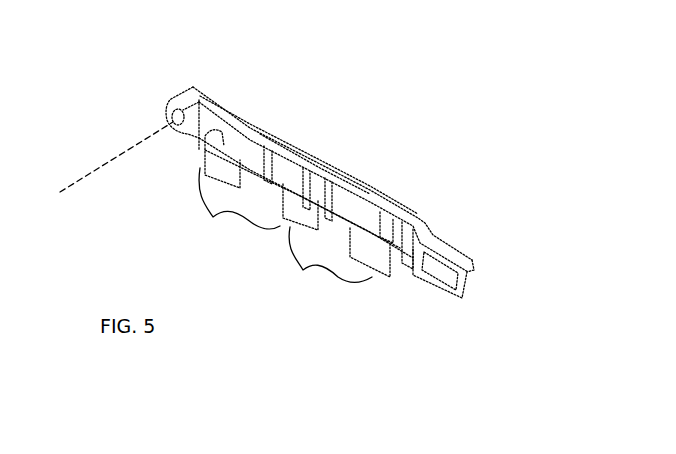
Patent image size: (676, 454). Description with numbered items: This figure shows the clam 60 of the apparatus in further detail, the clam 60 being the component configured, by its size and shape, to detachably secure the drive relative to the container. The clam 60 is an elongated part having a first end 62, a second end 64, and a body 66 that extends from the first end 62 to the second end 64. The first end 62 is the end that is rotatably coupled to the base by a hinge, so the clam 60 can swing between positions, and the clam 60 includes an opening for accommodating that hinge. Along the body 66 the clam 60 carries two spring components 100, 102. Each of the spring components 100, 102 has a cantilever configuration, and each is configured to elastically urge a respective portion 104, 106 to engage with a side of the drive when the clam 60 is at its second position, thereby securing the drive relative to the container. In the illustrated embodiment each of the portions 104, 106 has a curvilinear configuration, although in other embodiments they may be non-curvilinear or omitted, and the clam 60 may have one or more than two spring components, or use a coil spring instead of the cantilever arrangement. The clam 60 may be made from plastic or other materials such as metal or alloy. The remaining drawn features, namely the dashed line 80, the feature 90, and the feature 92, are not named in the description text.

The clam 60 is at (324, 150).
The first end 62 is at (220, 100).
The second end 64 is at (440, 240).
The body 66 is at (370, 187).
The longitudinal axis 80 is at (120, 152).
The mounting boss 90 is at (217, 139).
The tab 92 is at (378, 240).
The spring component 100 is at (213, 218).
The spring component 102 is at (303, 270).
The portion 104 is at (268, 172).
The portion 106 is at (330, 213).